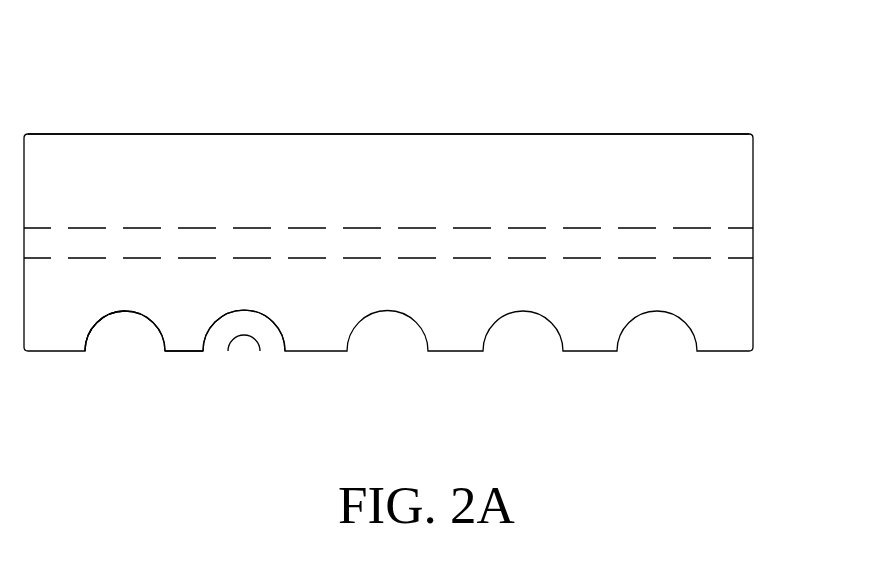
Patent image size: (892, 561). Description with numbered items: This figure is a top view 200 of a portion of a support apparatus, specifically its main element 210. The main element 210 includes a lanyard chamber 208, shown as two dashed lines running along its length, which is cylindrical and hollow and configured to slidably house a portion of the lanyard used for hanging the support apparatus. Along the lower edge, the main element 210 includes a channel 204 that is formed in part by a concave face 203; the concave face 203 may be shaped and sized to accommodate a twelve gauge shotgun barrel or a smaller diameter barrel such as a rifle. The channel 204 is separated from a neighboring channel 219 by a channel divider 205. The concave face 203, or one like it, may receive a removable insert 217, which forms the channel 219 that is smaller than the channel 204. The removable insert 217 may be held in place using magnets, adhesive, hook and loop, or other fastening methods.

The top view 200 is at (405, 78).
The main element 210 is at (598, 133).
The lanyard chamber 208 is at (757, 239).
The channel 204 is at (153, 313).
The concave face 203 is at (95, 331).
The channel divider 205 is at (189, 357).
The removable insert 217 is at (267, 336).
The channel 219 is at (247, 348).